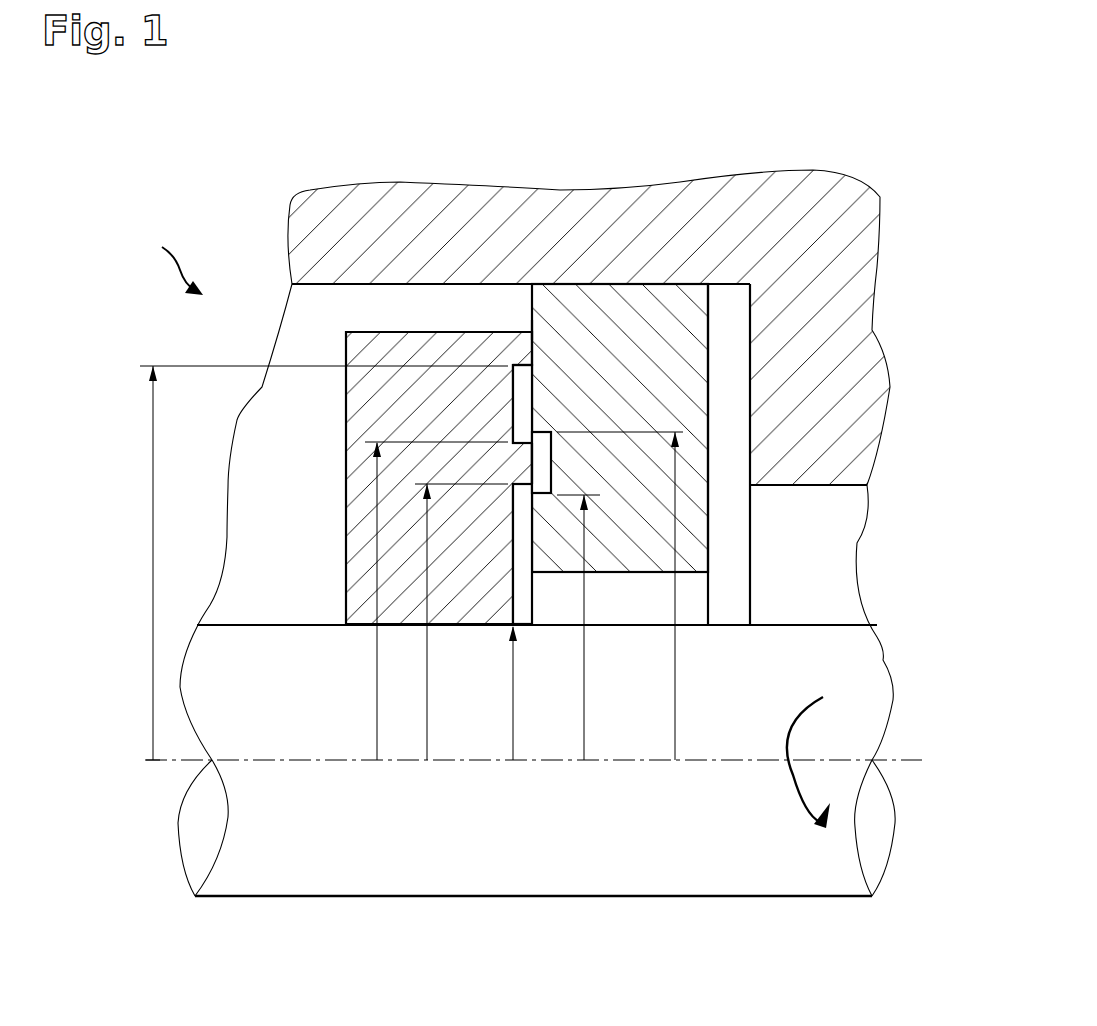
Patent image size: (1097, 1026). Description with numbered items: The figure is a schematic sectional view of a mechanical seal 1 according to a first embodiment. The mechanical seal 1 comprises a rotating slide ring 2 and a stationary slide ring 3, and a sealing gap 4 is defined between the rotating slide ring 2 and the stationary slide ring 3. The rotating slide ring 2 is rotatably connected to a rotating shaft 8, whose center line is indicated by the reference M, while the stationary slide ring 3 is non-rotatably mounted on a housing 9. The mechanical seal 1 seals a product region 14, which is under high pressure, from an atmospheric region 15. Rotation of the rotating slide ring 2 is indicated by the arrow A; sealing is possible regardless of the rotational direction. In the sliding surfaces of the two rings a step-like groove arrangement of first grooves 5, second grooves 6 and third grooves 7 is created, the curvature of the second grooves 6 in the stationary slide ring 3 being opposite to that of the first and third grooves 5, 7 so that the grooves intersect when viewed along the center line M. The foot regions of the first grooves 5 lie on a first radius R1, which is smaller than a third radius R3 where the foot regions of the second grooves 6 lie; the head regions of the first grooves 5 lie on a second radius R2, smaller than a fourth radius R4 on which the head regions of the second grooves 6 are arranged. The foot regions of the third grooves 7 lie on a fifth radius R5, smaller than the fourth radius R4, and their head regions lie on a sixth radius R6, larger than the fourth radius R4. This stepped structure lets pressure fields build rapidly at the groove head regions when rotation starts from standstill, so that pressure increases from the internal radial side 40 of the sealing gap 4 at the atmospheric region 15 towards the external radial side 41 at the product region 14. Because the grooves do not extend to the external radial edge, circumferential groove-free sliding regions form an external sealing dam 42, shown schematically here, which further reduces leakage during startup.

The mechanical seal 1 is at (172, 261).
The rotating slide ring 2 is at (425, 357).
The stationary slide ring 3 is at (636, 322).
The sealing gap 4 is at (532, 348).
The first grooves 5 is at (522, 523).
The second grooves 6 is at (540, 445).
The third grooves 7 is at (522, 412).
The rotating shaft 8 is at (808, 860).
The housing 9 is at (733, 210).
The product region 14 is at (293, 347).
The atmospheric region 15 is at (787, 570).
The internal radial side of the seal gap 40 is at (532, 572).
The external radial side of the seal gap 41 is at (532, 330).
The external sealing dam 42 is at (519, 347).
The arrow indicating rotation of the rotating slide ring A is at (797, 793).
The center line of the shaft M is at (553, 765).
The first radius R1 is at (512, 720).
The second radius R2 is at (427, 668).
The third radius R3 is at (585, 720).
The fourth radius R4 is at (675, 720).
The fifth radius R5 is at (377, 720).
The sixth radius R6 is at (153, 562).